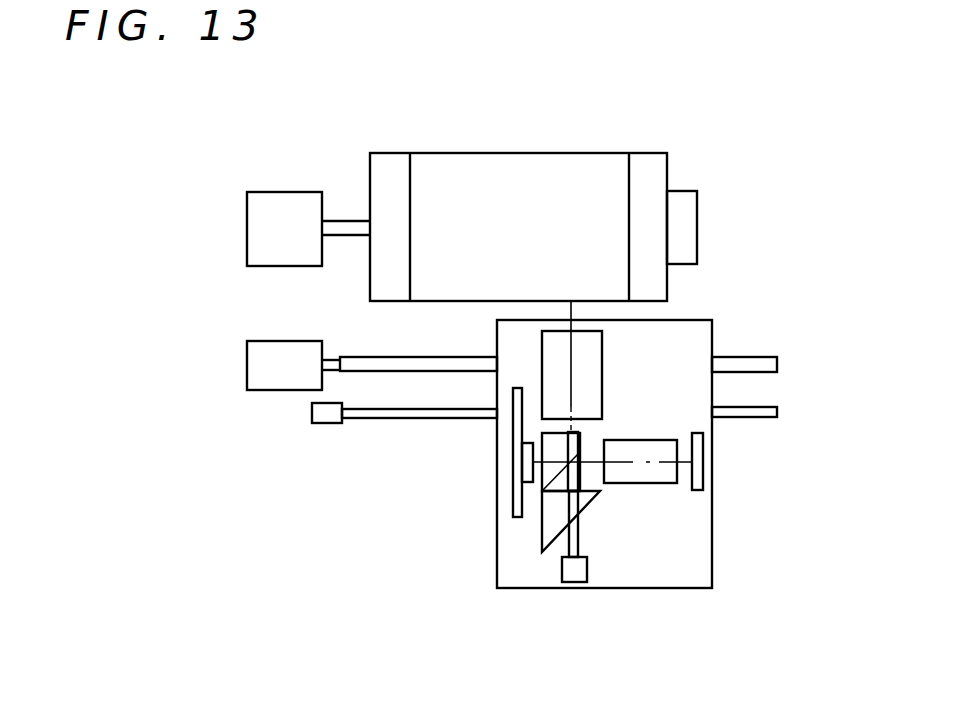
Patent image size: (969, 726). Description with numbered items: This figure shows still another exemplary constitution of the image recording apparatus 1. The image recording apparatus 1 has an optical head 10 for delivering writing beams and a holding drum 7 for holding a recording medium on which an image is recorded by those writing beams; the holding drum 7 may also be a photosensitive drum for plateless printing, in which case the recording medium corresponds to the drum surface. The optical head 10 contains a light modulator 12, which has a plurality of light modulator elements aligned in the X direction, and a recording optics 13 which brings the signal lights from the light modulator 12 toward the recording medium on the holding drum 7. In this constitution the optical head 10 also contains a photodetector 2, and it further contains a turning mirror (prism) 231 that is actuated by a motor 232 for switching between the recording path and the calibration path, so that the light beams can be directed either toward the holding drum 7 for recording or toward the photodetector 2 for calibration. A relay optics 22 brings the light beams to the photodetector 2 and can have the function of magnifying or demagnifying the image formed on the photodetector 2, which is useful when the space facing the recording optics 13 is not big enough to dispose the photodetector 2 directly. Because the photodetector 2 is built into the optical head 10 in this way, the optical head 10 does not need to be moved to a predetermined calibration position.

The image recording apparatus 1 is at (222, 125).
The holding drum 7 is at (648, 153).
The optical head 10 is at (712, 545).
The recording optics 13 is at (603, 362).
The light modulator 12 is at (541, 480).
The turning mirror (prism) 231 is at (580, 452).
The motor 232 is at (587, 568).
The photodetector 2 is at (703, 478).
The relay optics 22 is at (703, 445).